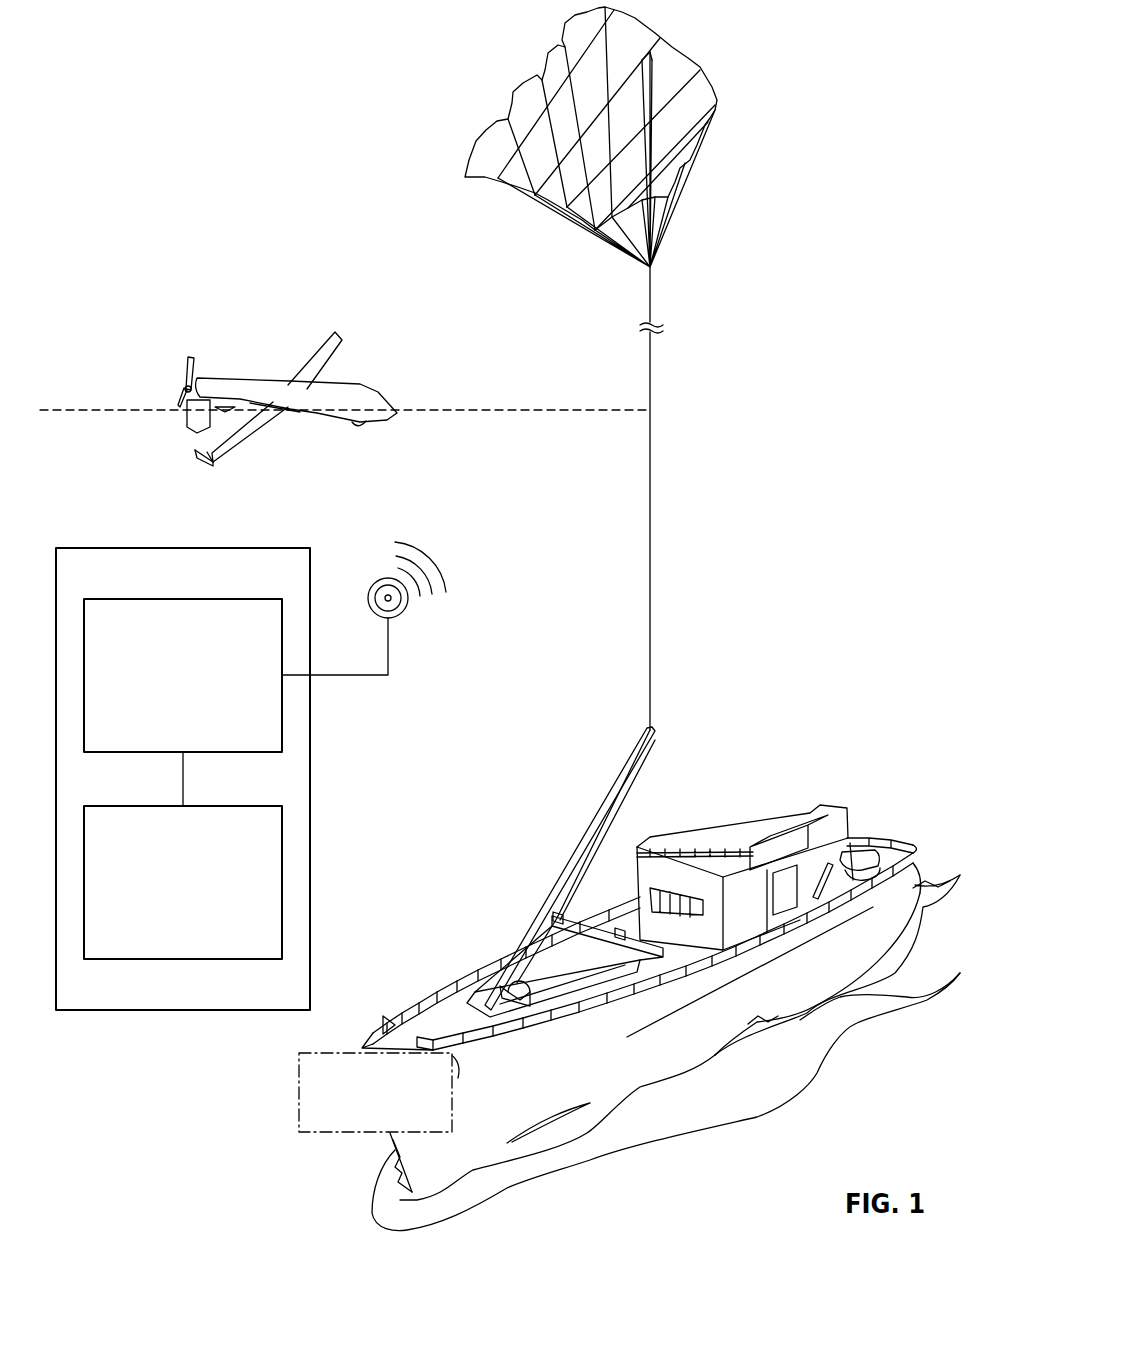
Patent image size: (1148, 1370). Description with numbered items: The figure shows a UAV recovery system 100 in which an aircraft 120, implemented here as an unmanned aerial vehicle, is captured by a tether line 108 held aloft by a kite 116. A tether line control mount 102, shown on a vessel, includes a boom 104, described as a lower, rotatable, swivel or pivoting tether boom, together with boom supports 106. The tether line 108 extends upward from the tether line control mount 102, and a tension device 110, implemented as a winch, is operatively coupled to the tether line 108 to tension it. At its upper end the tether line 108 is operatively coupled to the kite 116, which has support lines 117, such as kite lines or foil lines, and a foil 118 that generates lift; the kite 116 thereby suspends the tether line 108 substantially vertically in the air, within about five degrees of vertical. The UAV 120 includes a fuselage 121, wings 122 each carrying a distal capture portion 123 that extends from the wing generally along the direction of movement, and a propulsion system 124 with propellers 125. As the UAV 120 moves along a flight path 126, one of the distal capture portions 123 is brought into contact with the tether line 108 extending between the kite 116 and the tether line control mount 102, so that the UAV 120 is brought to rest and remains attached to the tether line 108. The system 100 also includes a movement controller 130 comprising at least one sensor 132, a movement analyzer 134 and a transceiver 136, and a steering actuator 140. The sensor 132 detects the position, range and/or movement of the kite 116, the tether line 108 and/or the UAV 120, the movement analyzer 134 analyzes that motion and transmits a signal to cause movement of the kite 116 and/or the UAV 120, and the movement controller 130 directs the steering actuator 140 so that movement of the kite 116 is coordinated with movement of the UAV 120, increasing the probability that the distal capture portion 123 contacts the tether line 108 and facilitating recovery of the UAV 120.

The UAV recovery system 100 is at (275, 52).
The tether line control mount 102 is at (661, 979).
The boom 104 is at (607, 800).
The boom supports 106 is at (556, 910).
The tether line 108 is at (651, 490).
The tension device 110 is at (522, 990).
The kite 116 is at (644, 136).
The support lines 117 is at (687, 187).
The foil 118 is at (703, 97).
The aircraft 120 is at (244, 388).
The fuselage 121 is at (340, 422).
The wings 122 is at (303, 362).
The distal capture portion 123 is at (203, 435).
The propulsion system 124 is at (153, 303).
The propellers 125 is at (187, 368).
The flight path 126 is at (515, 407).
The movement controller 130 is at (145, 531).
The sensor 132 is at (150, 599).
The movement analyzer 134 is at (150, 806).
The transceiver 136 is at (408, 607).
The steering actuator 140 is at (298, 1090).